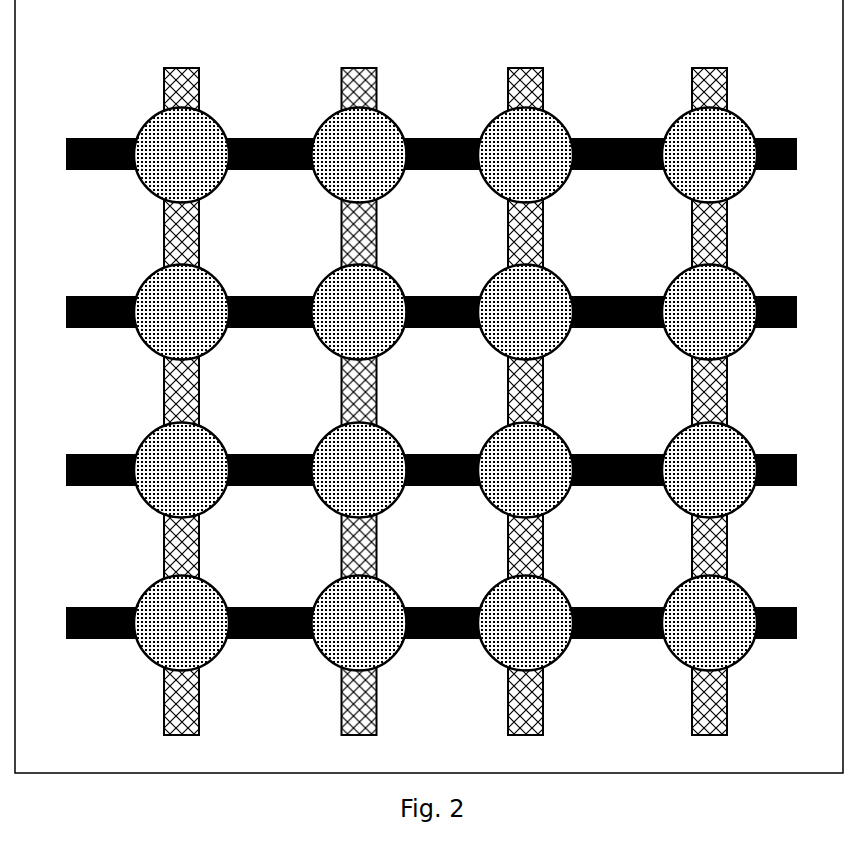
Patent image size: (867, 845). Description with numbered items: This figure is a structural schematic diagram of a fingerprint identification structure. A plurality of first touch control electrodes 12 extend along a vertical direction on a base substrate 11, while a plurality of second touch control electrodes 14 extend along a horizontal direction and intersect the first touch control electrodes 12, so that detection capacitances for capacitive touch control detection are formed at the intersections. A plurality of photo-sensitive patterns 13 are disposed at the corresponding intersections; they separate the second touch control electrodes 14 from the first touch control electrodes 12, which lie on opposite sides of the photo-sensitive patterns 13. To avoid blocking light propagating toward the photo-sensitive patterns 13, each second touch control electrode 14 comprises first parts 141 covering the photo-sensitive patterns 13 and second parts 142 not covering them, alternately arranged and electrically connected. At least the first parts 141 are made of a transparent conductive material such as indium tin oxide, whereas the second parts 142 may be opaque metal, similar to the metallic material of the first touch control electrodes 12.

The base substrate 11 is at (62, 26).
The first touch control electrodes 12 is at (197, 69).
The photo-sensitive patterns 13 is at (204, 128).
The second touch control electrodes 14 is at (80, 152).
The first parts 141 is at (231, 296).
The second parts 142 is at (272, 307).